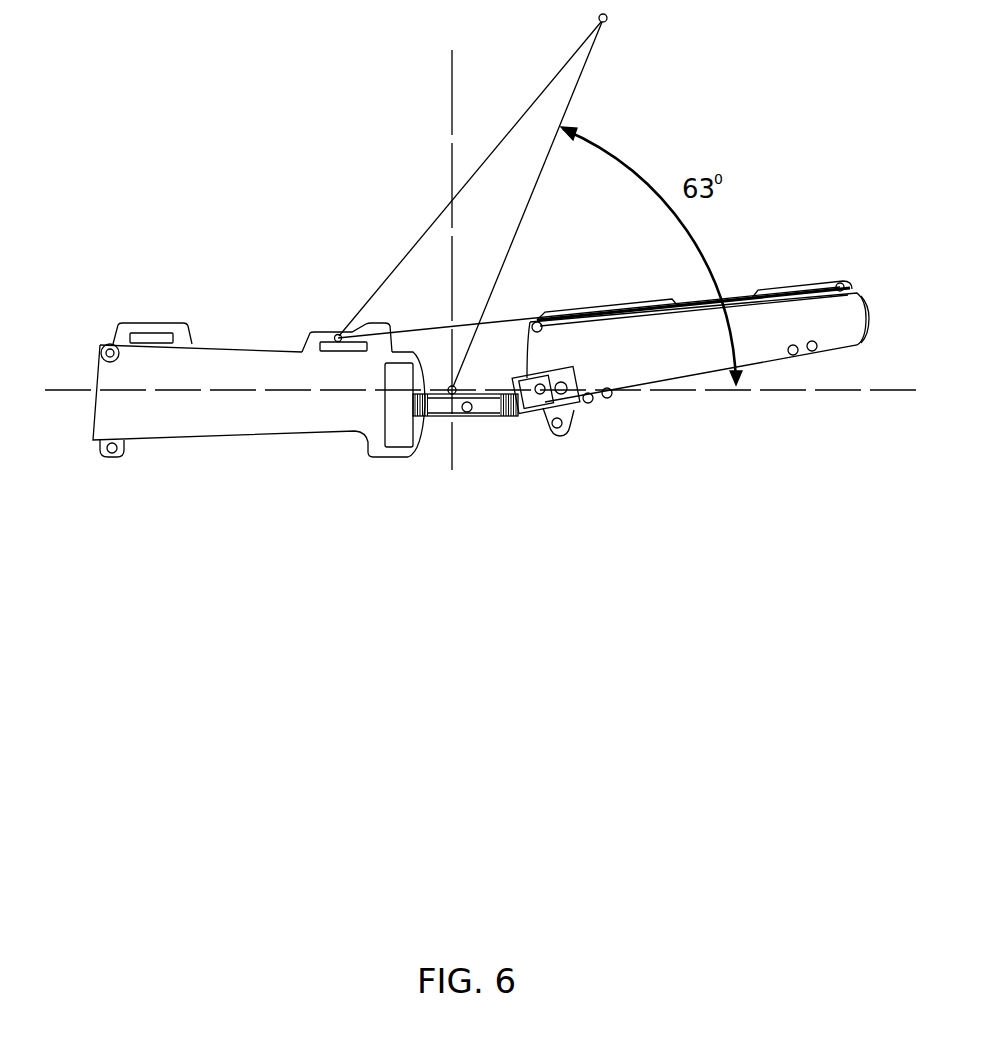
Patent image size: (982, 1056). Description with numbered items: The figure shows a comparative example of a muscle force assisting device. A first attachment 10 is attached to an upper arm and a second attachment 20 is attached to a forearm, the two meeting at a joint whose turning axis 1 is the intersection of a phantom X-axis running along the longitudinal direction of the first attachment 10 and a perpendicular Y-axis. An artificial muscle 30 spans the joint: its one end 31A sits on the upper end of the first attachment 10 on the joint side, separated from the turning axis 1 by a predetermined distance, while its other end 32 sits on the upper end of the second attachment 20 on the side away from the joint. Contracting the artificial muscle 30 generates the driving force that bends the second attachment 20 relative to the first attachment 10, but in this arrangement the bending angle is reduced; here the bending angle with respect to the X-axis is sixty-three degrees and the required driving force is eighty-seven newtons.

The first attachment 10 is at (102, 415).
The one end of the artificial muscle 31A is at (336, 336).
The turning axis 1 is at (456, 391).
The second attachment 20 is at (632, 375).
The artificial muscle 30 is at (783, 290).
The other end of the artificial muscle 32 is at (843, 283).